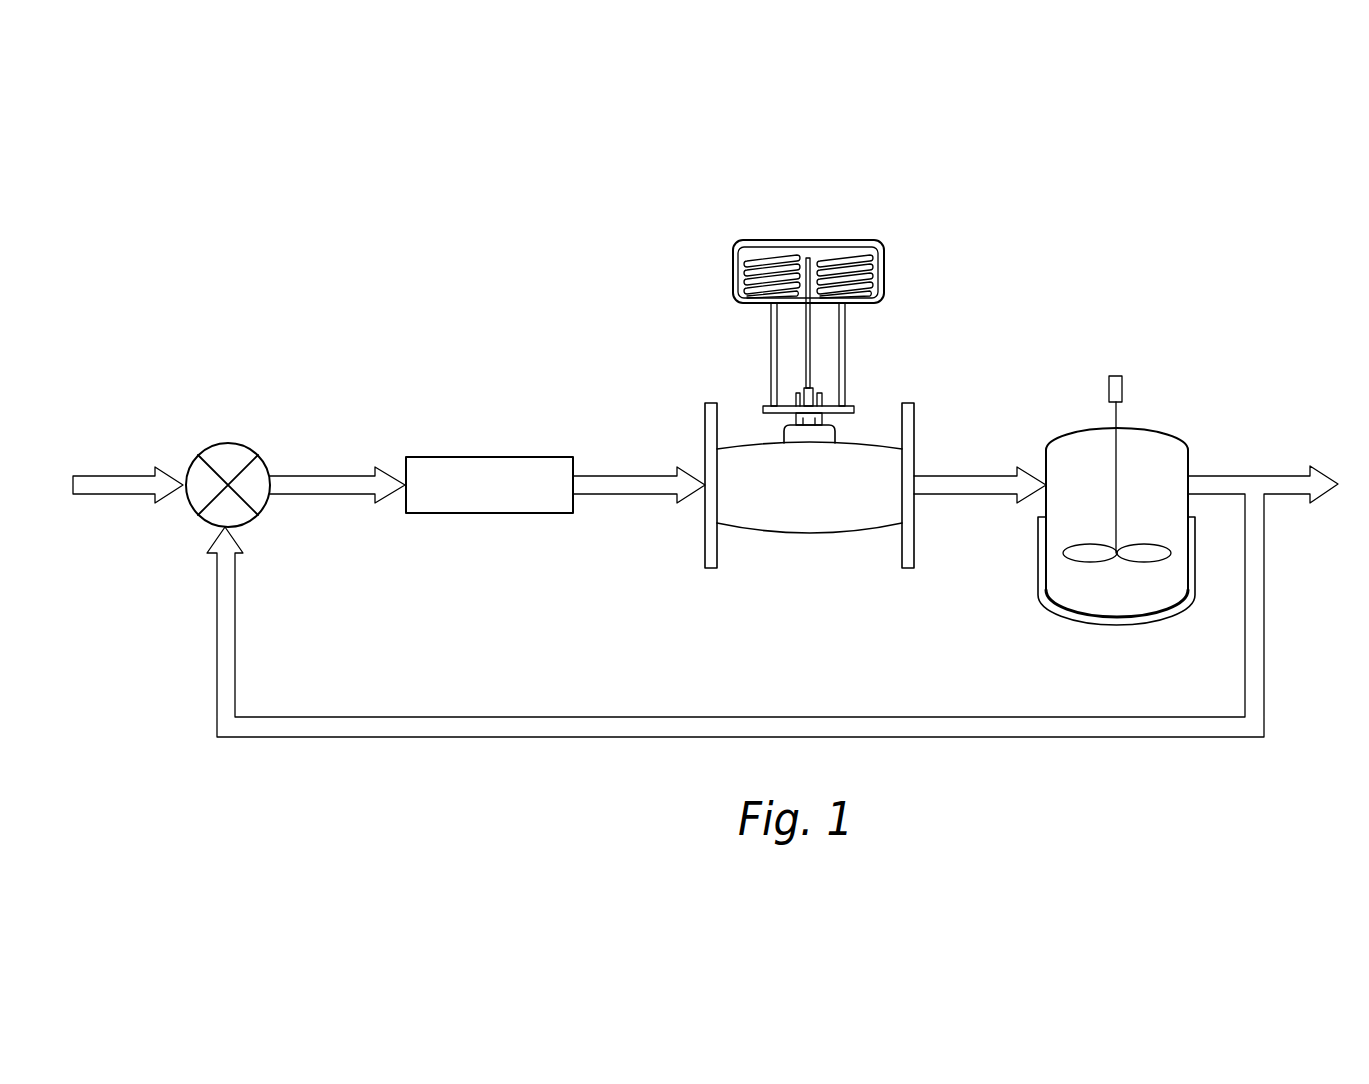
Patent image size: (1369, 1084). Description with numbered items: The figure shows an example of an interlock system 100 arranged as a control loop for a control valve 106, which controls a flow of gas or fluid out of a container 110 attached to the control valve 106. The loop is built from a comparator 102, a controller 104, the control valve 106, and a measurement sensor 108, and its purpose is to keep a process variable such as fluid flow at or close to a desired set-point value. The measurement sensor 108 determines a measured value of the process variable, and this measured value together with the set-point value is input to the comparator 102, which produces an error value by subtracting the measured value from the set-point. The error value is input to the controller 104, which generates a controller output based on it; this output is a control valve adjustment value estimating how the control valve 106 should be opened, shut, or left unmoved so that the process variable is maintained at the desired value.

The interlock system 100 is at (1166, 216).
The comparator 102 is at (212, 443).
The controller 104 is at (480, 457).
The control valve 106 is at (785, 240).
The measurement sensor 108 is at (1167, 433).
The container 110 is at (808, 490).